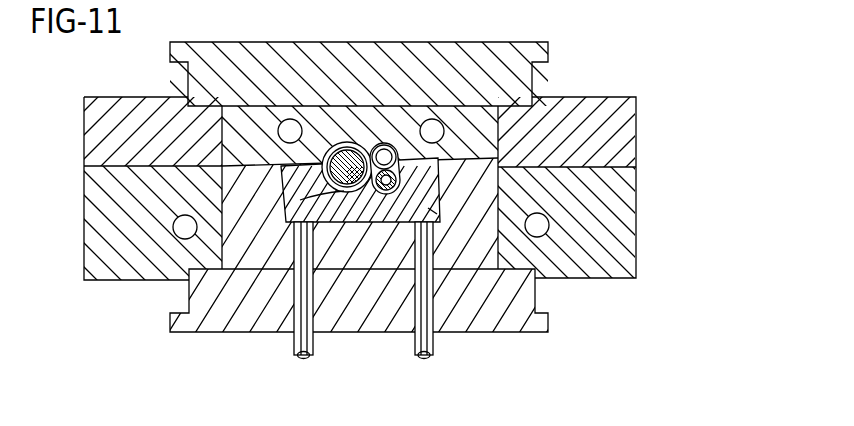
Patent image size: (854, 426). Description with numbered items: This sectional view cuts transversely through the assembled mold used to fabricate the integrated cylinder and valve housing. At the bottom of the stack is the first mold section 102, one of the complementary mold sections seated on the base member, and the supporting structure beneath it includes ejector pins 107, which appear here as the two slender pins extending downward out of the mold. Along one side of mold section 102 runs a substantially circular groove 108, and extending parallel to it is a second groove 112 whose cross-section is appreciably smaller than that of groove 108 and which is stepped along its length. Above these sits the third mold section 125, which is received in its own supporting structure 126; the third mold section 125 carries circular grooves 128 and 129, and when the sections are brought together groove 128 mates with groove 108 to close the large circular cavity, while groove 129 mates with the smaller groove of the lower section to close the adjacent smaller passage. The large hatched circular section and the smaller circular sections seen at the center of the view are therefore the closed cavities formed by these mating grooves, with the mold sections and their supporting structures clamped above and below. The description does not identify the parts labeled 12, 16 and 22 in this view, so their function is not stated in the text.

The tubular member 12 is at (348, 192).
The tube coupling 16 is at (375, 148).
The second tubular member 22 is at (387, 191).
The first mold section 102 is at (428, 208).
The ejector pins 107 is at (297, 348).
The circular groove 108 is at (300, 200).
The second groove 112 is at (398, 186).
The third mold section 125 is at (227, 134).
The supporting structure 126 is at (578, 72).
The circular groove 128 is at (330, 146).
The circular groove 129 is at (388, 145).